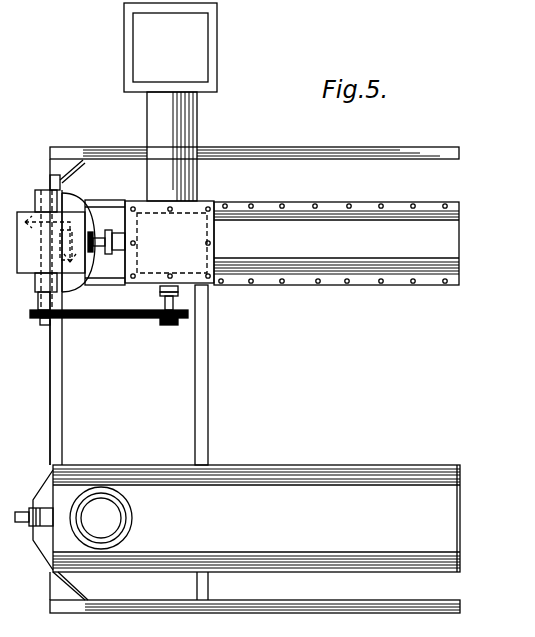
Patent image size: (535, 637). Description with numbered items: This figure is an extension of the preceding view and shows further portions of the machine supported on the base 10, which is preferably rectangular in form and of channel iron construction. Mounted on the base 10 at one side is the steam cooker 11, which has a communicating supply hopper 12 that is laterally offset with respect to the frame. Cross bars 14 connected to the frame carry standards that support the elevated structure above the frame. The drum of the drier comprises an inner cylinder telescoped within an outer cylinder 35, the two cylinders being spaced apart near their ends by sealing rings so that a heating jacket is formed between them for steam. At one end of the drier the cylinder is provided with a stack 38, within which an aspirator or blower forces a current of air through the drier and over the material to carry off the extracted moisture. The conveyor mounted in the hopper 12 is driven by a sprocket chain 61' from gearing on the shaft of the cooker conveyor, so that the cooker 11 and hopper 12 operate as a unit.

The base 10 is at (252, 613).
The steam cooker 11 is at (336, 243).
The supply hopper 12 is at (172, 122).
The cross bars 14 is at (202, 393).
The outer cylinder 35 is at (237, 518).
The stack 38 is at (127, 518).
The sprocket chain 61' is at (109, 333).